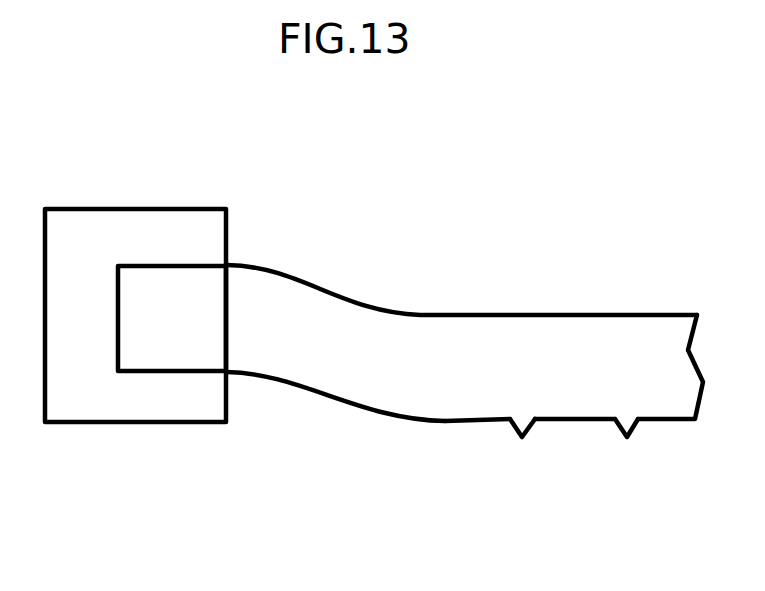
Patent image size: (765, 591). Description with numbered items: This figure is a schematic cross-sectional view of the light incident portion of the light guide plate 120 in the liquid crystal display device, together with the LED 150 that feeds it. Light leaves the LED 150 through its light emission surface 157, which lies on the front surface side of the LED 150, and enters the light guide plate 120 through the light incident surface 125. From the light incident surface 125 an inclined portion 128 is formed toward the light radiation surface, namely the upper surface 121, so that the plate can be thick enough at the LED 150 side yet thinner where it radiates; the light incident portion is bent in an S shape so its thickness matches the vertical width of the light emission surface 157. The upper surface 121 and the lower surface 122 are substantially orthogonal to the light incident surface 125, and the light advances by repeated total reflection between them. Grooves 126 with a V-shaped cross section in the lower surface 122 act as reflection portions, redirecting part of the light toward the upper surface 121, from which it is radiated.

The LED 150 is at (158, 243).
The light emission surface 157 is at (168, 355).
The light guide plate 120 is at (465, 389).
The upper surface 121 is at (515, 313).
The lower surface 122 is at (555, 420).
The grooves 126 is at (627, 423).
The light incident surface 125 is at (227, 322).
The inclined portion 128 is at (325, 353).